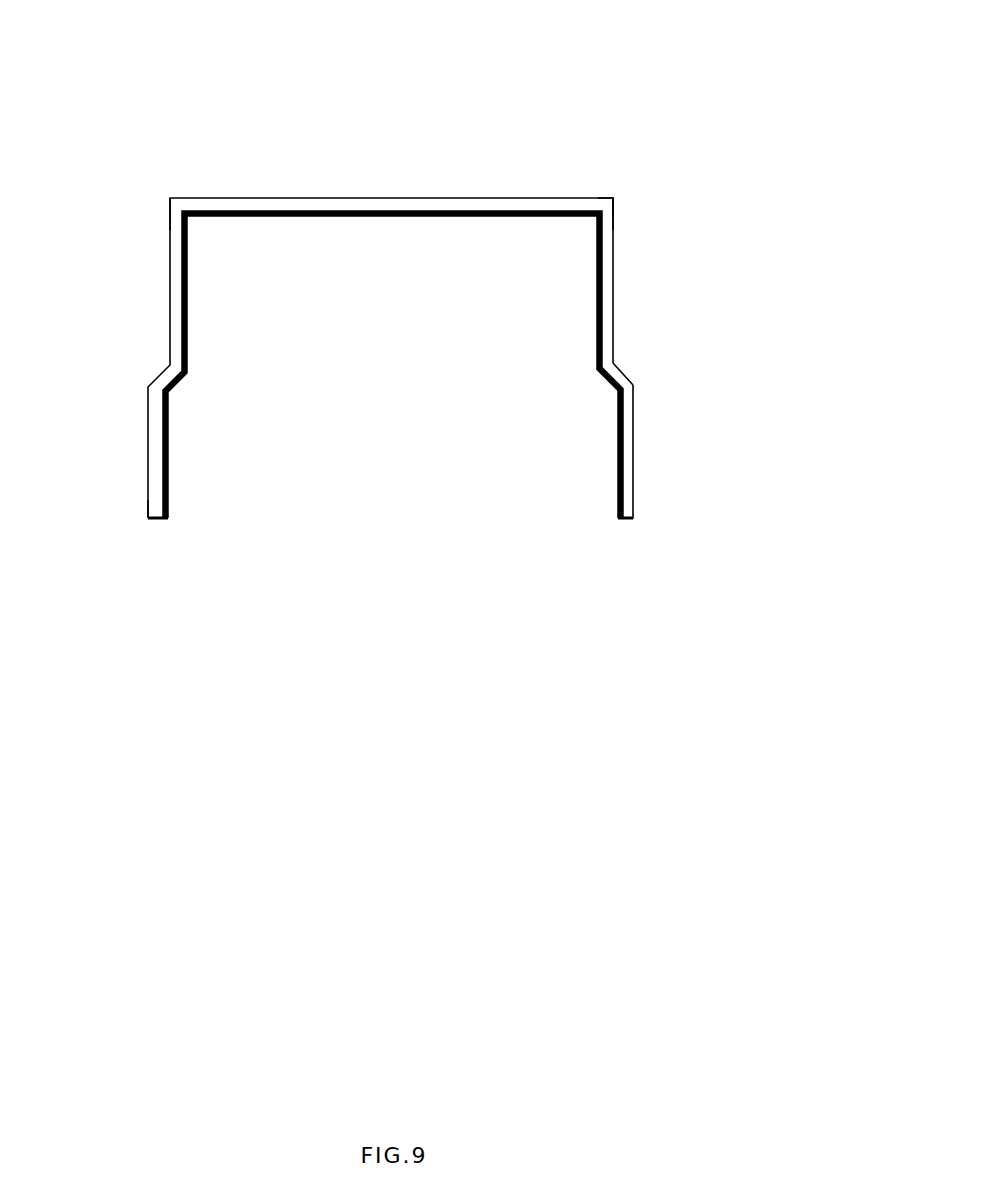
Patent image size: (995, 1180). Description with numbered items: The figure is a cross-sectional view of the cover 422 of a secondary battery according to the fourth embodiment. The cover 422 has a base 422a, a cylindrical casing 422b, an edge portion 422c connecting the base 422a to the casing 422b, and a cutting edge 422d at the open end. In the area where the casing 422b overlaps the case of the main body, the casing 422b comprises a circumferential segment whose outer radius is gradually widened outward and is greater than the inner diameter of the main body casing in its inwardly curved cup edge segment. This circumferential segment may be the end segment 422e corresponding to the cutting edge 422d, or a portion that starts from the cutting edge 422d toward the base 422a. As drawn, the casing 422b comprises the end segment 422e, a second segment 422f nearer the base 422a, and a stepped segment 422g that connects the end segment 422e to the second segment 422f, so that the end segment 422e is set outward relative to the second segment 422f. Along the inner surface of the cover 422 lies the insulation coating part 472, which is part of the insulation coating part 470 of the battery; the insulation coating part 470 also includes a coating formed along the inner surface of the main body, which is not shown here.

The cover 422 is at (605, 91).
The base 422a is at (615, 190).
The cylindrical casing 422b is at (140, 198).
The edge portion 422c is at (625, 190).
The cutting edge 422d is at (159, 530).
The end segment 422e is at (643, 387).
The second segment 422f is at (643, 198).
The stepped segment 422g is at (643, 373).
The insulation coating part 470 is at (617, 453).
The insulation coating part 472 is at (393, 366).